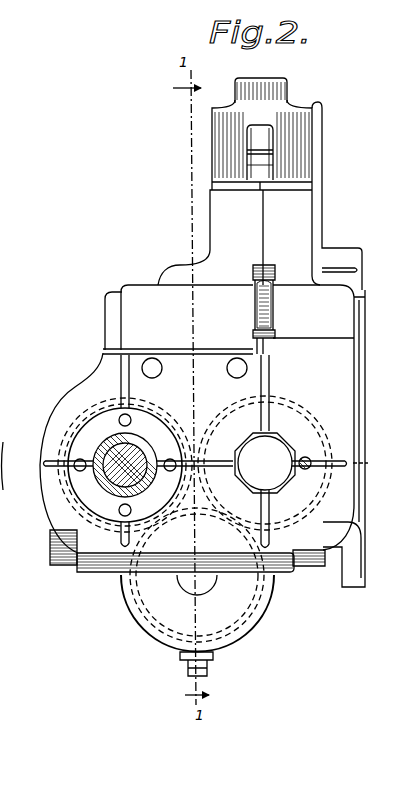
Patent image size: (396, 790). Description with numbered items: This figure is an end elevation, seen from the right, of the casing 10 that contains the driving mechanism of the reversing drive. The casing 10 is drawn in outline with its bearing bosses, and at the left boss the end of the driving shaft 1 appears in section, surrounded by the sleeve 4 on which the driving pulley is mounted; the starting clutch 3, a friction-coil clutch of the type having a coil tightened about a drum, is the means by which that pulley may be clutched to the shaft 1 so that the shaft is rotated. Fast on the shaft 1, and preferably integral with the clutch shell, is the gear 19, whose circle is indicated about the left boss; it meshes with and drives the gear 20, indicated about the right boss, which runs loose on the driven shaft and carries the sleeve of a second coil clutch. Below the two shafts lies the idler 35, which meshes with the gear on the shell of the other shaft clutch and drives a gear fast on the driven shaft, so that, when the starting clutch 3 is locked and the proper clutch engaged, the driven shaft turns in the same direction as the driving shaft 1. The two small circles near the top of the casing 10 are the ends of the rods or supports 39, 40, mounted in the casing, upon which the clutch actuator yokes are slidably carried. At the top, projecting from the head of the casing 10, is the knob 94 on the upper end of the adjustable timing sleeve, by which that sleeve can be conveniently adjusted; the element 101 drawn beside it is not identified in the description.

The driving shaft 1 is at (110, 473).
The starting clutch 3 is at (32, 456).
The sleeve 4 is at (113, 450).
The casing 10 is at (343, 357).
The gear 19 is at (143, 403).
The gear 20 is at (300, 412).
The idler 35 is at (137, 607).
The rod or support 39 is at (162, 370).
The rod or support 40 is at (232, 378).
The knob 94 is at (270, 152).
The cylinder 101 is at (263, 135).